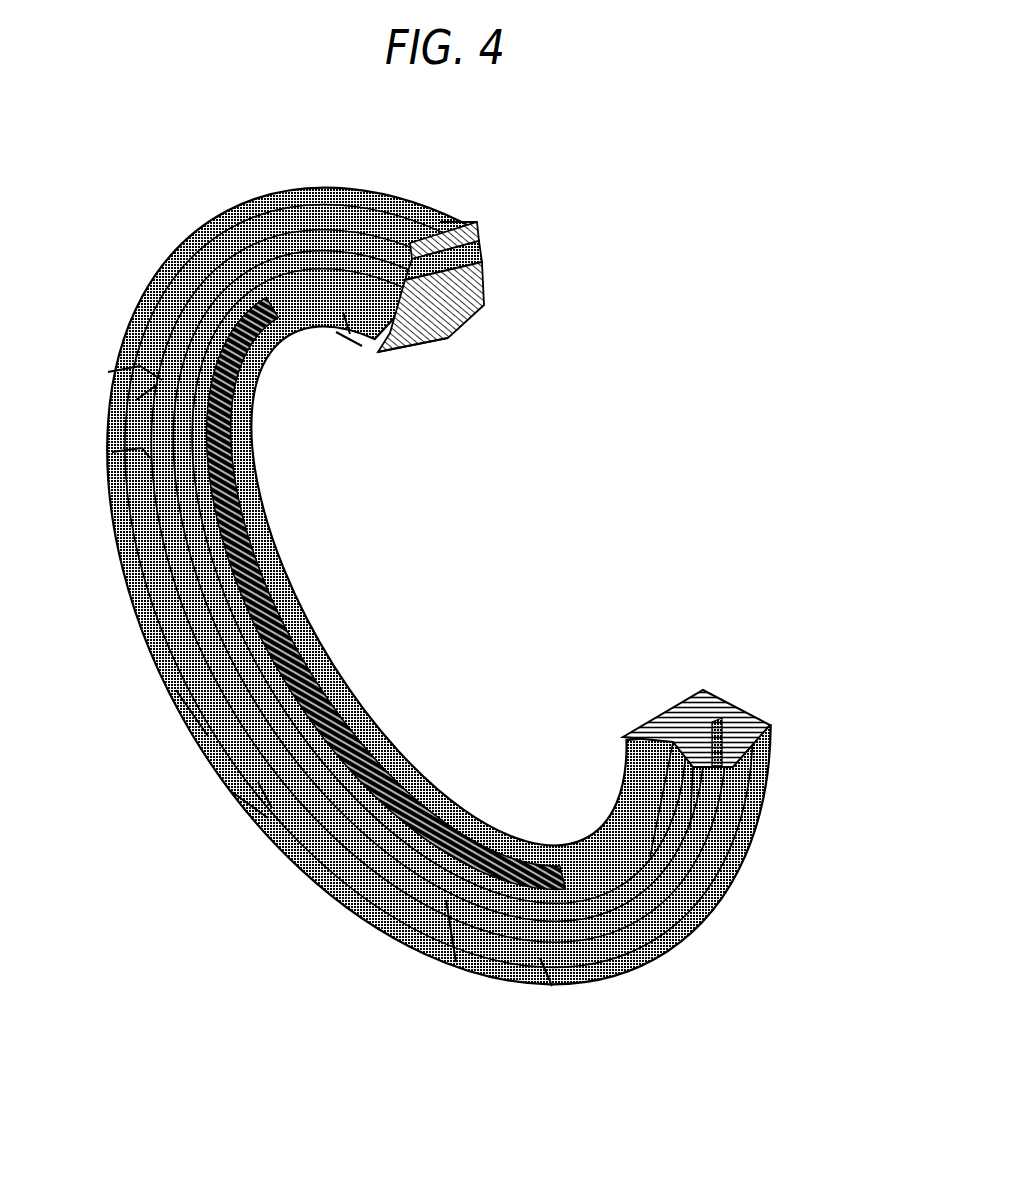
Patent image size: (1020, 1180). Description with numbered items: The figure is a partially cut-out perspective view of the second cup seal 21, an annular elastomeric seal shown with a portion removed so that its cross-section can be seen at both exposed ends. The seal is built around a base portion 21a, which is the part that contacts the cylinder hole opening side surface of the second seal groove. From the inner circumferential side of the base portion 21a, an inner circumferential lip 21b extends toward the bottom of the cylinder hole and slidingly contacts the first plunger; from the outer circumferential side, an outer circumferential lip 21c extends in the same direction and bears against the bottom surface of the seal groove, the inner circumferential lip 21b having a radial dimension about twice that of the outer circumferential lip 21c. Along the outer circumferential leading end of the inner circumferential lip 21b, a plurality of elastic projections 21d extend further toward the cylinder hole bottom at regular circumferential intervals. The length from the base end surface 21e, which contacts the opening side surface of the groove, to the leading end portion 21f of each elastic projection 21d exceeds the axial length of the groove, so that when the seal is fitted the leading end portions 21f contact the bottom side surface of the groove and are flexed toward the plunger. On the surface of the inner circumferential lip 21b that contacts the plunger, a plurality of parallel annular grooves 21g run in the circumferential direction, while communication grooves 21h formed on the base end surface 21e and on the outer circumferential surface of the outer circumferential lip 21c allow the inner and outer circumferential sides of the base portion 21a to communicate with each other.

The second cup seal 21 is at (659, 291).
The base portion 21a is at (486, 278).
The inner circumferential lip 21b is at (427, 340).
The outer circumferential lip 21c is at (430, 232).
The elastic projection 21d is at (137, 383).
The base end surface 21e is at (486, 248).
The leading end portion 21f is at (112, 450).
The annular groove 21g is at (303, 684).
The communication groove 21h is at (460, 220).